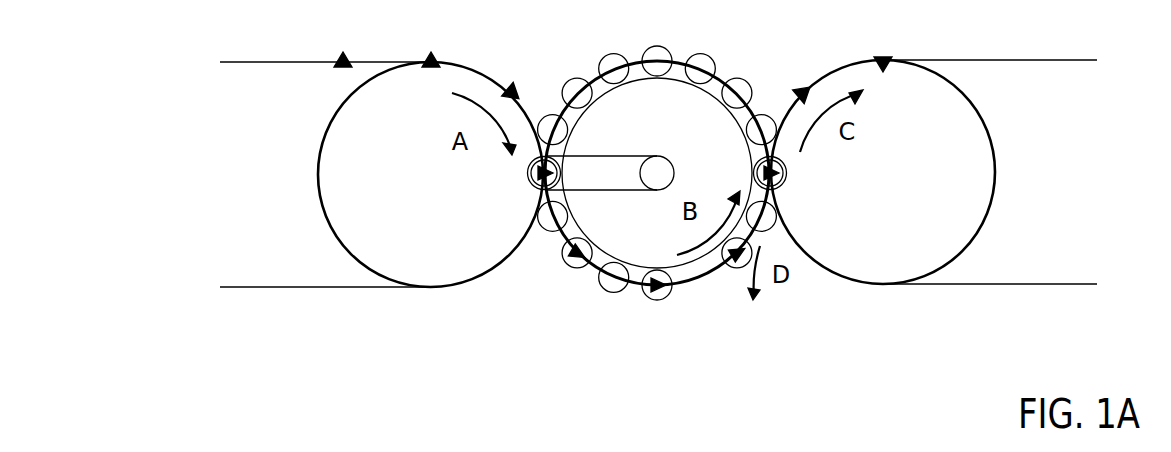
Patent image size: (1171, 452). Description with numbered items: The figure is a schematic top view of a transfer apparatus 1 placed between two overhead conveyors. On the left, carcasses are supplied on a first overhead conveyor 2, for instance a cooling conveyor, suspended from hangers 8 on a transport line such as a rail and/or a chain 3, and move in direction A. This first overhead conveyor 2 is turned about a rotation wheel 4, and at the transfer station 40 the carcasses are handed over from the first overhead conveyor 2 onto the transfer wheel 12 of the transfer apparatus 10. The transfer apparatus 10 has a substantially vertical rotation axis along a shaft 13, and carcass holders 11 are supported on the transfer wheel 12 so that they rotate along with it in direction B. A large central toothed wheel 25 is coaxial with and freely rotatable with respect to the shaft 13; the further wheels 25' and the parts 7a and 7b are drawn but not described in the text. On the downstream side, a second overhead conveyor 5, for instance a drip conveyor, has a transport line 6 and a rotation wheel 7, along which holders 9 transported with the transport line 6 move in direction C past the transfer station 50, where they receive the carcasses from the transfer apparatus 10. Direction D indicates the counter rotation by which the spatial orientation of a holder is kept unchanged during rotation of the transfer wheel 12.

The transfer apparatus 1 is at (308, 360).
The first overhead conveyor 2 is at (243, 235).
The chain 3 is at (328, 288).
The rotation wheel 4 is at (498, 252).
The second overhead conveyor 5 is at (1043, 227).
The transport line 6 is at (955, 285).
The rotation wheel 7 is at (847, 258).
The first roller pair 7a is at (350, 451).
The second roller pair 7b is at (775, 451).
The hangers 8 is at (435, 56).
The holders 9 is at (884, 56).
The transfer apparatus 10 is at (622, 330).
The carcass holders 11 is at (718, 290).
The transfer wheel 12 is at (698, 161).
The shaft 13 is at (663, 168).
The central toothed wheel 25 is at (657, 266).
The upper rollers 25' is at (657, 74).
The transfer station 40 is at (545, 158).
The transfer station 50 is at (772, 158).